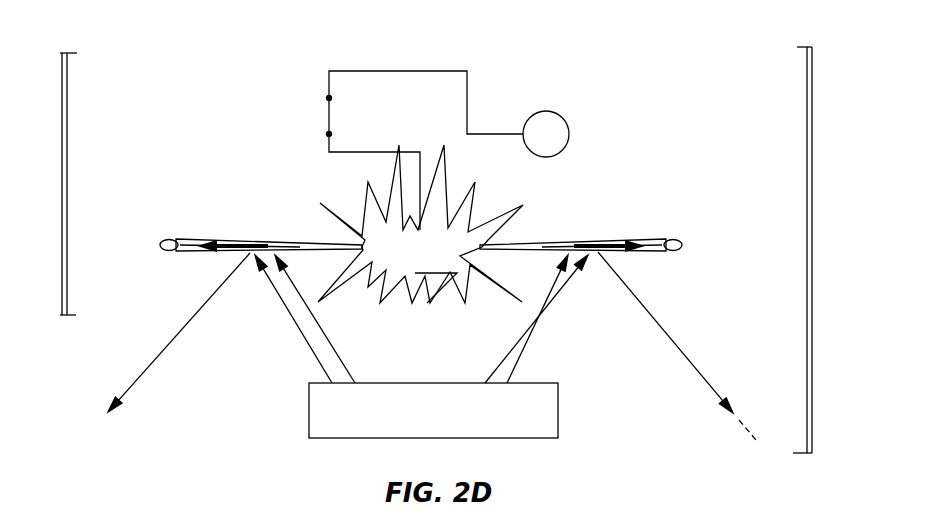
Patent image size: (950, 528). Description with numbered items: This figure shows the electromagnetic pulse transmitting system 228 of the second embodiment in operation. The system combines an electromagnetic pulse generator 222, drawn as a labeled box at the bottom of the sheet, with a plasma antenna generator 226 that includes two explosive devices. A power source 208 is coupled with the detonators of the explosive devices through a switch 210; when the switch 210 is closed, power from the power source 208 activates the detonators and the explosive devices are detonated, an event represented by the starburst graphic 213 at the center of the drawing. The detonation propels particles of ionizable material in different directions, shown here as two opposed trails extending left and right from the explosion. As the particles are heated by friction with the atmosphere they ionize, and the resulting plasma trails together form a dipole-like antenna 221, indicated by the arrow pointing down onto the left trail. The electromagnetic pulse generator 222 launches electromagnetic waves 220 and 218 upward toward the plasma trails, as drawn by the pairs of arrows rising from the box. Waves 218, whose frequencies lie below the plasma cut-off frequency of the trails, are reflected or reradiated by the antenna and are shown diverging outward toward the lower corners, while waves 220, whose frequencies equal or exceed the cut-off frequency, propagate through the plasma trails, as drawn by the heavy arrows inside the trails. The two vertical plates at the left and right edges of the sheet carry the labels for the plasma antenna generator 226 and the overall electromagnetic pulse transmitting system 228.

The power source 208 is at (567, 120).
The switch 210 is at (330, 120).
The graphic 213 is at (350, 223).
The electromagnetic waves 218 is at (175, 332).
The electromagnetic waves 220 is at (218, 241).
The dipole-like antenna 221 is at (219, 225).
The electromagnetic pulse generator 222 is at (558, 395).
The plasma antenna generator 226 is at (60, 67).
The electromagnetic pulse transmitting system 228 is at (812, 170).